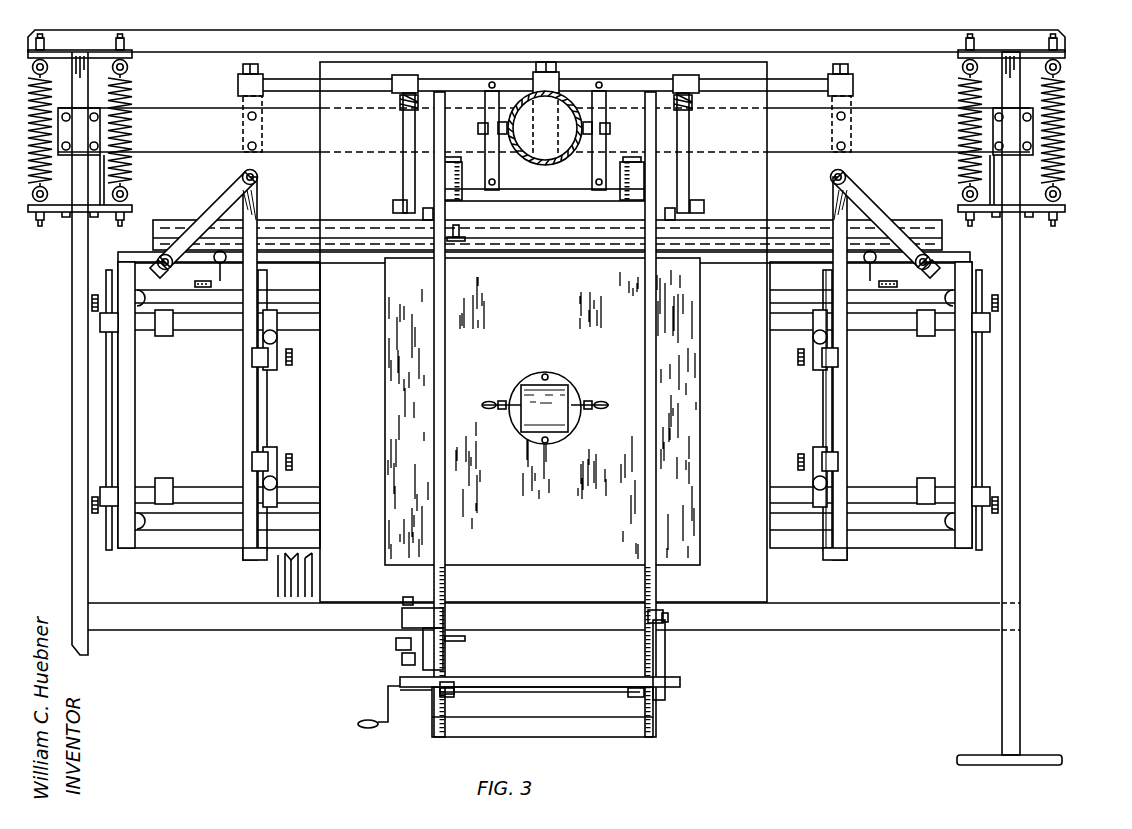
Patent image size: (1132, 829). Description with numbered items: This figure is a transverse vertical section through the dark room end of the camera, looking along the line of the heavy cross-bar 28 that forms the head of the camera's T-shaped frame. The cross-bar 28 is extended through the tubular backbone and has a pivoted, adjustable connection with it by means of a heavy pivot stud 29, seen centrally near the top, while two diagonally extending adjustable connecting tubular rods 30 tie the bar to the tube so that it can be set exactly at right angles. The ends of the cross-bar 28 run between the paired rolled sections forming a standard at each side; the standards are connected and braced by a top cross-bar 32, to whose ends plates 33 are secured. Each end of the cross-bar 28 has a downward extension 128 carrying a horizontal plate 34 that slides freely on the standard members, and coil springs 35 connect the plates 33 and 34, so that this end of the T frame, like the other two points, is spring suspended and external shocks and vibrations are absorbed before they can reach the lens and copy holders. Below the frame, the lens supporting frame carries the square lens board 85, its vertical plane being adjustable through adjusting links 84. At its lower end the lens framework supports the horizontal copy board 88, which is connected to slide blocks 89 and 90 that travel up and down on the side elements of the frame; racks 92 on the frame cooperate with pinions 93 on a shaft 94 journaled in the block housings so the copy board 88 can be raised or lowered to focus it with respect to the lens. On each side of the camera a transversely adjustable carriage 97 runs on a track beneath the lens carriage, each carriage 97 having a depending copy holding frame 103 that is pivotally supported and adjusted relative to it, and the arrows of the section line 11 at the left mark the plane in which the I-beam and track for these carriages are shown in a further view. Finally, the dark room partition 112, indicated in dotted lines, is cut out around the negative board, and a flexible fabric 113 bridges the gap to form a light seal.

The mounting arm assembly 11 is at (196, 347).
The heavy cross-bar 28 is at (884, 122).
The pivot stud 29 is at (553, 104).
The adjustable connecting tubular rod 30 is at (427, 80).
The top cross-bar 32 is at (940, 42).
The plate 33 is at (1065, 53).
The horizontal plate 34 is at (1035, 212).
The coil spring 35 is at (1064, 126).
The adjusting link 84 is at (403, 178).
The lens board 85 is at (542, 411).
The copy board 88 is at (557, 686).
The slide block 89 is at (424, 640).
The slide block 90 is at (660, 654).
The rack 92 is at (432, 728).
The pinion 93 is at (447, 696).
The shaft 94 is at (600, 692).
The transversely adjustable carriage 97 is at (208, 268).
The depending copy holding frame 103 is at (840, 417).
The room partition 112 is at (280, 597).
The flexible fabric 113 is at (300, 587).
The downward extension 128 is at (1025, 180).